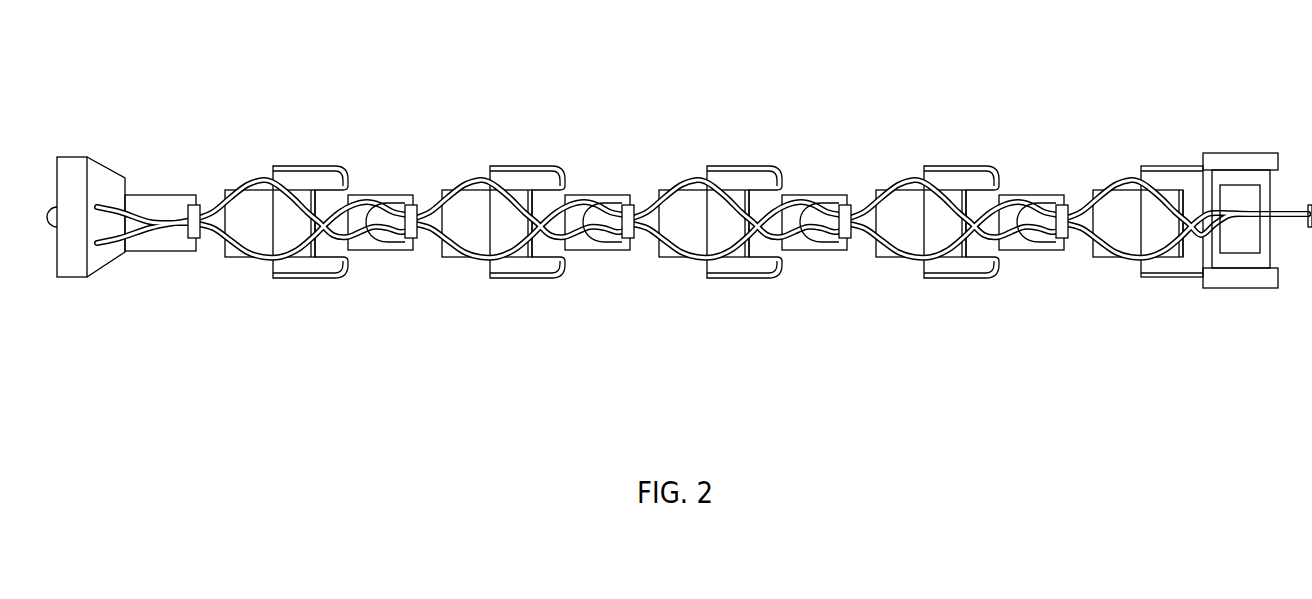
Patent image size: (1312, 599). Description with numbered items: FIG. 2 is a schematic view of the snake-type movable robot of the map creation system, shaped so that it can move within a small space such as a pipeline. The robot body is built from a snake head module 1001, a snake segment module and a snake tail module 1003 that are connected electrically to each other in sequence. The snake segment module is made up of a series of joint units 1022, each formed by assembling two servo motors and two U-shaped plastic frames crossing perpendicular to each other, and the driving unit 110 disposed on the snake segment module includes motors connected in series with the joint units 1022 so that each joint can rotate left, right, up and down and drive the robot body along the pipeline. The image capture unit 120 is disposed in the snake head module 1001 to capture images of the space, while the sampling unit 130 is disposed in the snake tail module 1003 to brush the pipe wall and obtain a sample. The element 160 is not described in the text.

The driving unit 110 is at (702, 237).
The image capture unit 120 is at (108, 239).
The sampling unit 130 is at (1232, 318).
The protrusion 160 is at (50, 210).
The snake head module 1001 is at (103, 177).
The joint unit 1022 is at (560, 173).
The snake tail module 1003 is at (1205, 182).